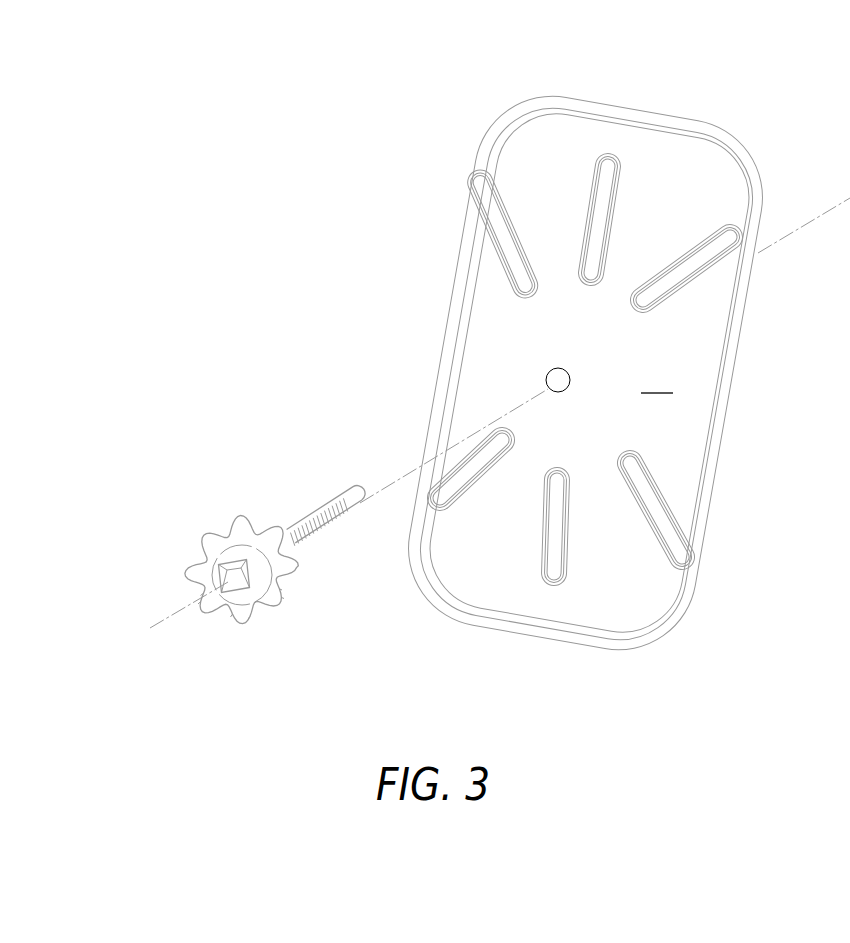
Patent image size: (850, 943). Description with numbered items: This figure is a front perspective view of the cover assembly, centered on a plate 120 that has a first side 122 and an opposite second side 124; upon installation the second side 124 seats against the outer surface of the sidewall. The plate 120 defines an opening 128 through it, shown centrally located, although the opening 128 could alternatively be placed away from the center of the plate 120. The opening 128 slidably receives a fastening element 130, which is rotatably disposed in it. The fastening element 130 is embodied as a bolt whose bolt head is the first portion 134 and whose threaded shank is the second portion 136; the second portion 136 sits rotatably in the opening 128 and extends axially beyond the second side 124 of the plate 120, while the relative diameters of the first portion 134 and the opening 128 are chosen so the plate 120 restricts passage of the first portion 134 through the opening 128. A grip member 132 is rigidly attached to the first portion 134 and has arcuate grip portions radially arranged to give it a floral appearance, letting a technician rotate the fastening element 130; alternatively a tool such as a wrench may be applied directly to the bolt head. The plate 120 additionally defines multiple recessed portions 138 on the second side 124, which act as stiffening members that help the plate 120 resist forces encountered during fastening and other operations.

The plate 120 is at (595, 344).
The first side 122 is at (657, 381).
The second side 124 is at (750, 320).
The opening 128 is at (555, 380).
The fastening element 130 is at (257, 535).
The grip member 132 is at (210, 551).
The first portion 134 is at (233, 575).
The second portion 136 is at (349, 502).
The recessed portions 138 is at (608, 181).